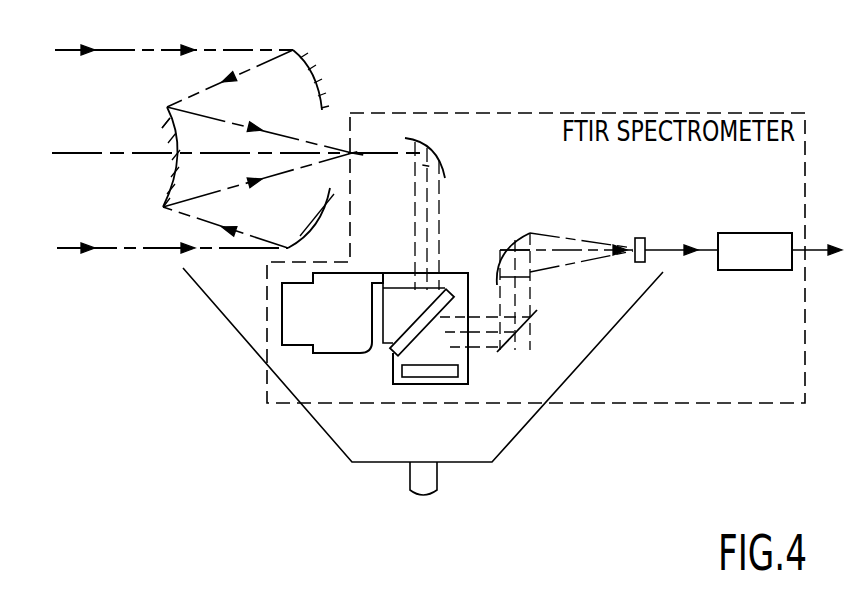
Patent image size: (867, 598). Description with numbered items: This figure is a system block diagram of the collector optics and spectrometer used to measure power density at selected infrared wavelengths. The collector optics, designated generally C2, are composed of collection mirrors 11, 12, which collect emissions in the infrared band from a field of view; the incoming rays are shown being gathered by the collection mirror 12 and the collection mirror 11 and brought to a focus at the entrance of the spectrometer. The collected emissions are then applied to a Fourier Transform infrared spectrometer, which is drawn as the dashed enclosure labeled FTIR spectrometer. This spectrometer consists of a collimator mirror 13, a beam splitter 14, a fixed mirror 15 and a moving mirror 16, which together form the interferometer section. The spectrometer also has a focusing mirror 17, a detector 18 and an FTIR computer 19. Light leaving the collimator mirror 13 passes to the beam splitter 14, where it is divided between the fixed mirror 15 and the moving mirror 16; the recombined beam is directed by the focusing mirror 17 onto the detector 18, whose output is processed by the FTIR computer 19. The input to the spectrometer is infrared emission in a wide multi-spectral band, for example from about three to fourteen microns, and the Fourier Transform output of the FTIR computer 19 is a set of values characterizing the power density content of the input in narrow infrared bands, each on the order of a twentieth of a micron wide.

The collection mirror 11 is at (165, 107).
The collector optics C2 is at (153, 134).
The collection mirror 12 is at (303, 52).
The collimator mirror 13 is at (437, 160).
The beam splitter 14 is at (460, 273).
The fixed mirror 15 is at (458, 372).
The moving mirror 16 is at (347, 356).
The focusing mirror 17 is at (525, 234).
The detector 18 is at (640, 236).
The FTIR computer 19 is at (738, 232).